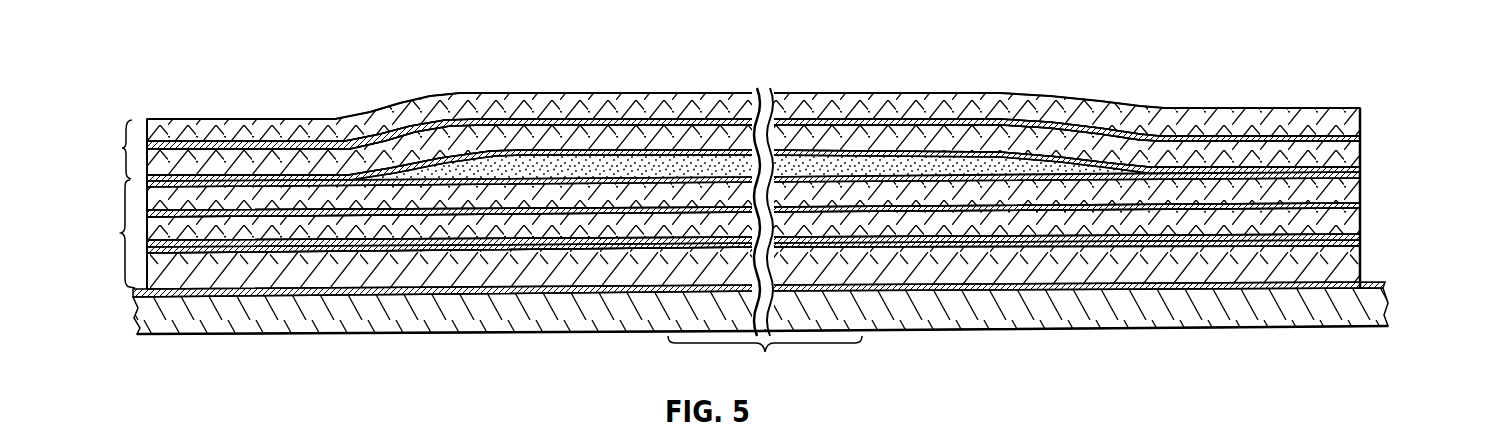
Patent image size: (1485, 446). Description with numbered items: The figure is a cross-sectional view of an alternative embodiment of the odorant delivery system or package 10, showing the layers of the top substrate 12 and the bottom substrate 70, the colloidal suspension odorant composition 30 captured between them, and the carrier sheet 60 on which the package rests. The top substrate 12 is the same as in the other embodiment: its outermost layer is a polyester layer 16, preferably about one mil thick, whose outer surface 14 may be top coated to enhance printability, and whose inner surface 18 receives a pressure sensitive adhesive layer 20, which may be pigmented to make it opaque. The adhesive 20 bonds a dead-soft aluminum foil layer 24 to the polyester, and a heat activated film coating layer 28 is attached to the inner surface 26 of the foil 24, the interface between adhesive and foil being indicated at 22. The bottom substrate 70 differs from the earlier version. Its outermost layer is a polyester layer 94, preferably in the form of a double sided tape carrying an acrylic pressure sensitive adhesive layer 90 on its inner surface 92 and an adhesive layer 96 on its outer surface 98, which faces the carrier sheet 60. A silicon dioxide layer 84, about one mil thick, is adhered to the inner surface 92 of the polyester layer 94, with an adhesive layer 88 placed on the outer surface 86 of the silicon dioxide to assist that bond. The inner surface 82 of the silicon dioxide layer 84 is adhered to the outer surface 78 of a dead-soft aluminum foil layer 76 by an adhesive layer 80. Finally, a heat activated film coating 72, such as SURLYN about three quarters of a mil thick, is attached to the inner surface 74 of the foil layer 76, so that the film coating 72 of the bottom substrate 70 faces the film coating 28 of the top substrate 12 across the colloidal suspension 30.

The odorant delivery system 10 is at (779, 219).
The top substrate 12 is at (799, 120).
The outer surface 14 is at (1240, 107).
The polyester layer 16 is at (1360, 108).
The inner surface 18 is at (1157, 134).
The adhesive layer 20 is at (1362, 130).
The interface 22 is at (955, 124).
The foil layer 24 is at (1362, 147).
The inner surface 26 is at (997, 146).
The heat activated film coating layer 28 is at (1362, 165).
The colloidal suspension odorant composition 30 is at (425, 177).
The carrier sheet 60 is at (455, 334).
The bottom substrate 70 is at (782, 281).
The heat activated film coating 72 is at (1362, 174).
The inner surface 74 is at (965, 183).
The foil layer 76 is at (1362, 187).
The outer surface 78 is at (983, 200).
The adhesive layer 80 is at (1362, 205).
The inner surface 82 is at (1033, 210).
The silicon dioxide layer 84 is at (1362, 220).
The outer surface 86 is at (1060, 231).
The adhesive layer 88 is at (1362, 235).
The adhesive layer 90 is at (1362, 245).
The inner surface 92 is at (1110, 245).
The polyester layer 94 is at (1362, 277).
The adhesive layer 96 is at (1366, 327).
The outer surface 98 is at (1146, 284).